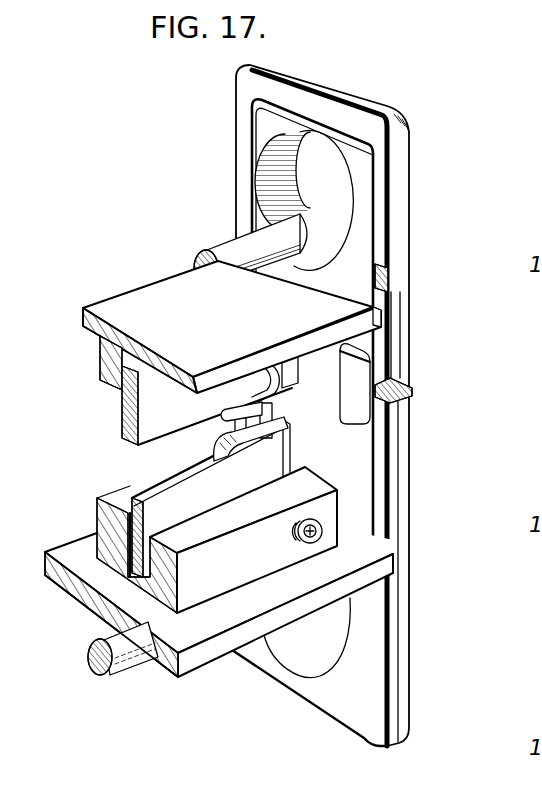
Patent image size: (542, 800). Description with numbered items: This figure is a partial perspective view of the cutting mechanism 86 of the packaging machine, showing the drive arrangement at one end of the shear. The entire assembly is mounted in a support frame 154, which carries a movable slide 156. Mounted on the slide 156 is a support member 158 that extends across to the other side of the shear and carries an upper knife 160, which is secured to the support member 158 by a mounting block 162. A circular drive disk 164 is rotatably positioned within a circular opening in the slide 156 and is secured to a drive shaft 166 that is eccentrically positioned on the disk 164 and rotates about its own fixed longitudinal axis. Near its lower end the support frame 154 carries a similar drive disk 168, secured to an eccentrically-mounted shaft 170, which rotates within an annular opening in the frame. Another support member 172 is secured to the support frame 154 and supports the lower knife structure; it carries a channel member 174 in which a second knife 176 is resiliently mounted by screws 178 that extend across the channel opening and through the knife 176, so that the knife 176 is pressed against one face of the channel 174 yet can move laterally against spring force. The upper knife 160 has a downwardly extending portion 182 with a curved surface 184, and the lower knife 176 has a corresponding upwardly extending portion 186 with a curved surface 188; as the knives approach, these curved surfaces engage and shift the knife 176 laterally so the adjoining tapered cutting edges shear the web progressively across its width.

The table assembly 86 is at (424, 121).
The support frame 154 is at (408, 197).
The movable slide 156 is at (257, 147).
The support member 158 is at (149, 287).
The knife 160 is at (125, 410).
The mounting block 162 is at (100, 362).
The circular drive disk 164 is at (318, 172).
The drive shaft 166 is at (226, 250).
The drive disk 168 is at (313, 664).
The shaft 170 is at (100, 667).
The support member 172 is at (68, 582).
The channel member 174 is at (97, 513).
The second knife 176 is at (153, 486).
The screws 178 is at (308, 544).
The downwardly extending portion 182 is at (226, 418).
The curved surface 184 is at (273, 358).
The upwardly extending portion 186 is at (288, 424).
The curved surface 188 is at (254, 477).